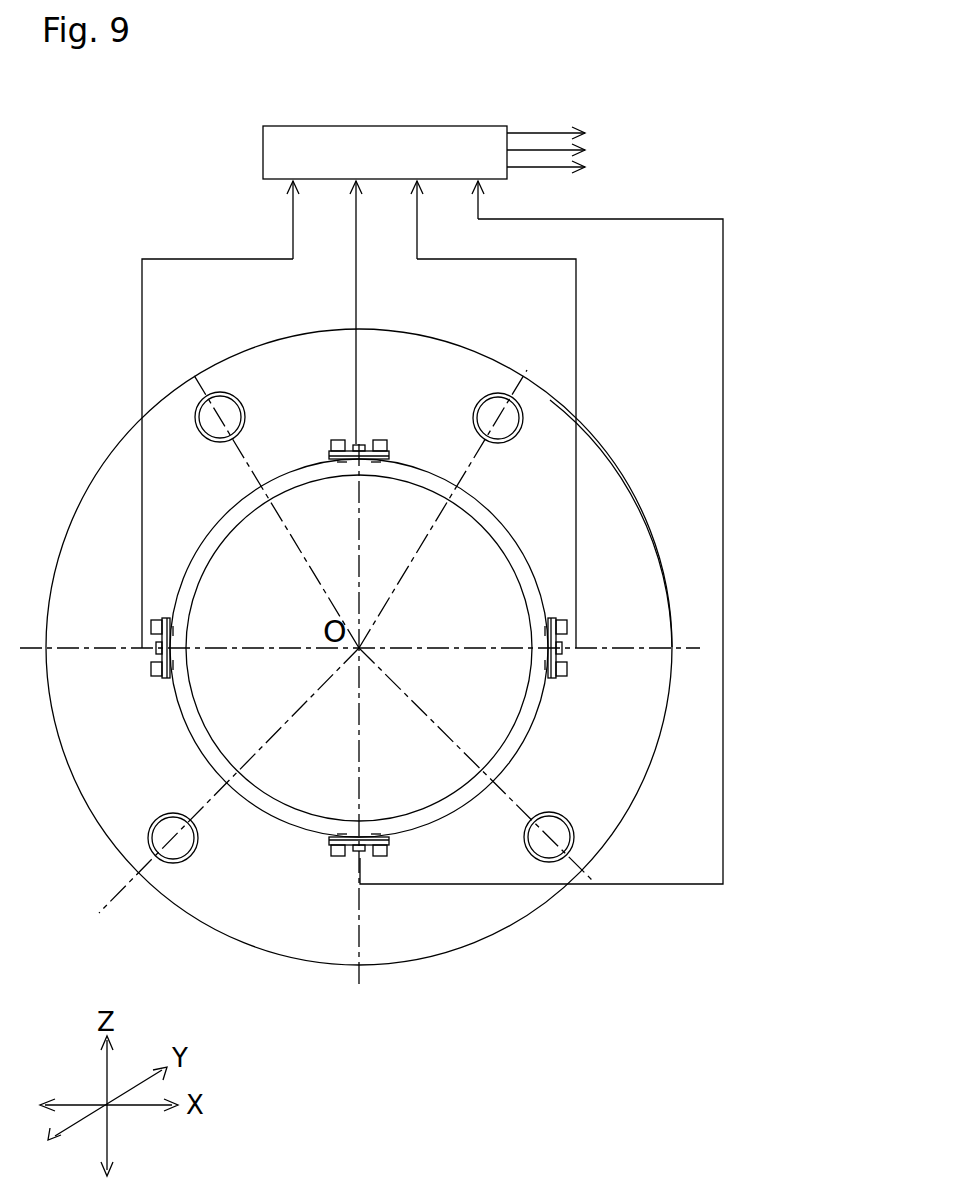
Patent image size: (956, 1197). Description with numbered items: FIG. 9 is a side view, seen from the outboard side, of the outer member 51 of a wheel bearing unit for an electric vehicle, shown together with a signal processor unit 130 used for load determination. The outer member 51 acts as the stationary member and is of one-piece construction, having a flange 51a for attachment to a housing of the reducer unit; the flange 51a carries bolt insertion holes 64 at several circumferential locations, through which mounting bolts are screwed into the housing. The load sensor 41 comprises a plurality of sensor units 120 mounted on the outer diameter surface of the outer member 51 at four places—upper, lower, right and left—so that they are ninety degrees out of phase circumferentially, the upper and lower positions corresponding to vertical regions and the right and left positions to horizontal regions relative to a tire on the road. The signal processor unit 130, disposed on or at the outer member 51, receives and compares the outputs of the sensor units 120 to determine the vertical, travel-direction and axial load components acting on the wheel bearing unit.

The load sensor 41 is at (254, 130).
The outer member 51 is at (228, 340).
The flange 51a is at (576, 415).
The bolt insertion holes 64 is at (205, 410).
The sensor units 120 is at (373, 467).
The signal processor unit 130 is at (397, 127).